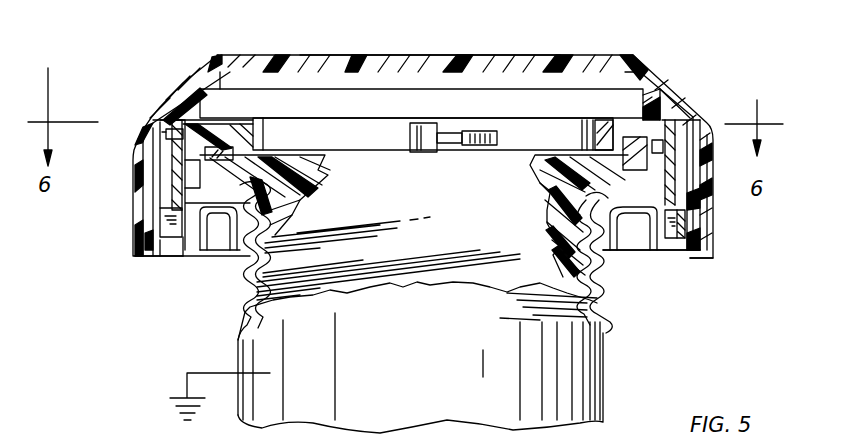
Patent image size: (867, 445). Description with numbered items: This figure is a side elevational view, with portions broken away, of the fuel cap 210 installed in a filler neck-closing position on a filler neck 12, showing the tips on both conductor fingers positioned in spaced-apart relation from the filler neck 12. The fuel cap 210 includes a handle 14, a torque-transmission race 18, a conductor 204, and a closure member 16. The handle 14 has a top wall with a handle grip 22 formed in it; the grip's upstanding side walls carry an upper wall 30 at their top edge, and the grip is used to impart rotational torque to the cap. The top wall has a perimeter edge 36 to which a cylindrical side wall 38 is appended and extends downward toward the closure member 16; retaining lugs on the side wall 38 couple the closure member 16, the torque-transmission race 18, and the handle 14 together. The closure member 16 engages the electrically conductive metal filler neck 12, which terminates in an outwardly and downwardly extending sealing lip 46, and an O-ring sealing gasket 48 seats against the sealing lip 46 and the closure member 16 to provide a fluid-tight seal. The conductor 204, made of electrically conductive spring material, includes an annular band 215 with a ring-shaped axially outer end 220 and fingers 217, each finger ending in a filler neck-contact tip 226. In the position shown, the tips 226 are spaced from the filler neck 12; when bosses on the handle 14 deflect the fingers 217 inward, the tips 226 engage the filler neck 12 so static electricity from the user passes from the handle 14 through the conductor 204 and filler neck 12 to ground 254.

The filler neck 12 is at (608, 273).
The handle 14 is at (604, 57).
The closure member 16 is at (557, 270).
The torque-transmission race 18 is at (368, 130).
The handle grip 22 is at (298, 85).
The upper wall 30 is at (490, 57).
The perimeter edge 36 is at (687, 118).
The cylindrical side wall 38 is at (683, 157).
The sealing lip 46 is at (627, 220).
The O-ring sealing gasket 48 is at (270, 197).
The conductor 204 is at (160, 188).
The fuel cap 210 is at (701, 77).
The annular band 215 is at (176, 195).
The fingers 217 is at (160, 256).
The ring-shaped axially outer end 220 is at (170, 143).
The filler neck-contact tip 226 is at (172, 236).
The ground 254 is at (187, 382).